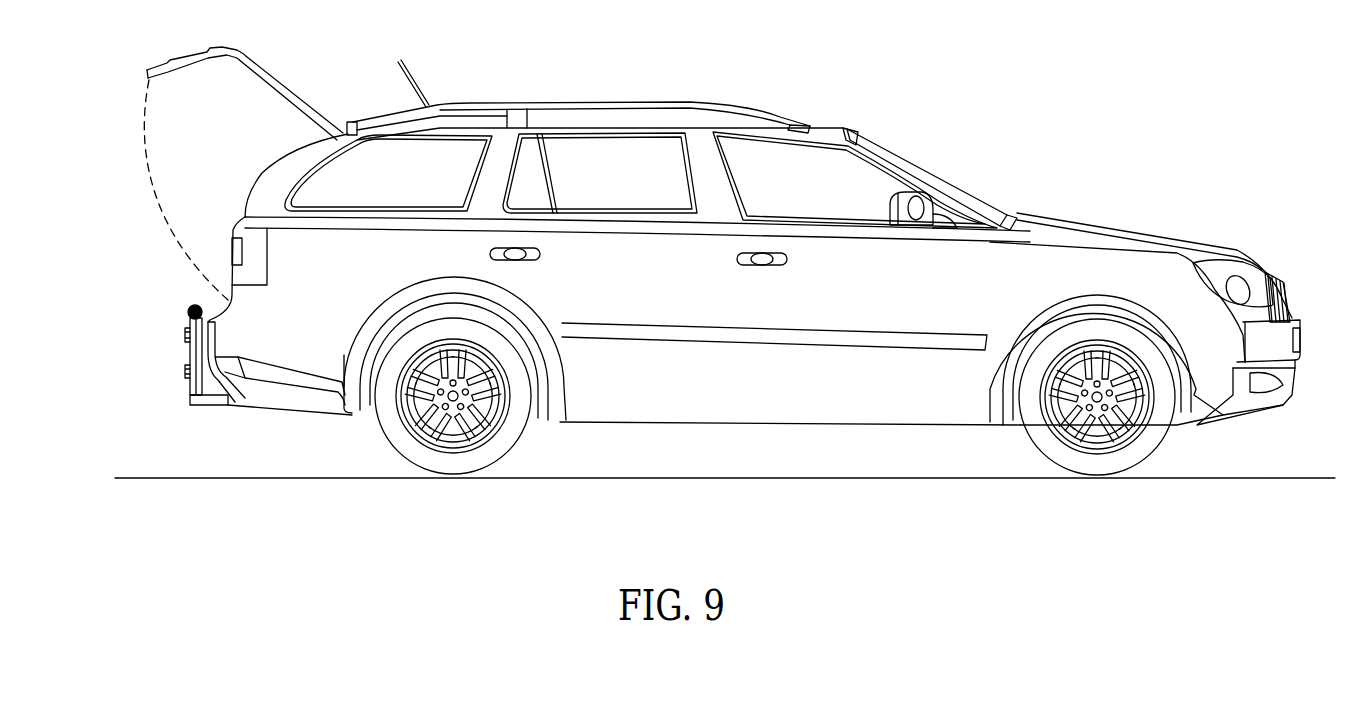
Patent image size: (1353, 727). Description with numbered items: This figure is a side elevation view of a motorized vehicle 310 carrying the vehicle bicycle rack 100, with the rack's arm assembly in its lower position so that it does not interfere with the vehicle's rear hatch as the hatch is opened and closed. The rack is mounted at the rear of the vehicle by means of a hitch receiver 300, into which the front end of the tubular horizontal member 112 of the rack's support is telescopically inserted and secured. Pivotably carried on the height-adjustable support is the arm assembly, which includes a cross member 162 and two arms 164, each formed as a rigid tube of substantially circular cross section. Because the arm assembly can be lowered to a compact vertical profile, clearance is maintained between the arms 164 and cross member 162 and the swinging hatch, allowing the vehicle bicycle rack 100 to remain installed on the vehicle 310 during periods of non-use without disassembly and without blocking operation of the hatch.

The vehicle bicycle rack 100 is at (164, 364).
The horizontal member 112 is at (190, 422).
The cross member 162 is at (189, 308).
The arms 164 is at (190, 355).
The hitch receiver 300 is at (722, 261).
The motorized vehicle 310 is at (930, 168).